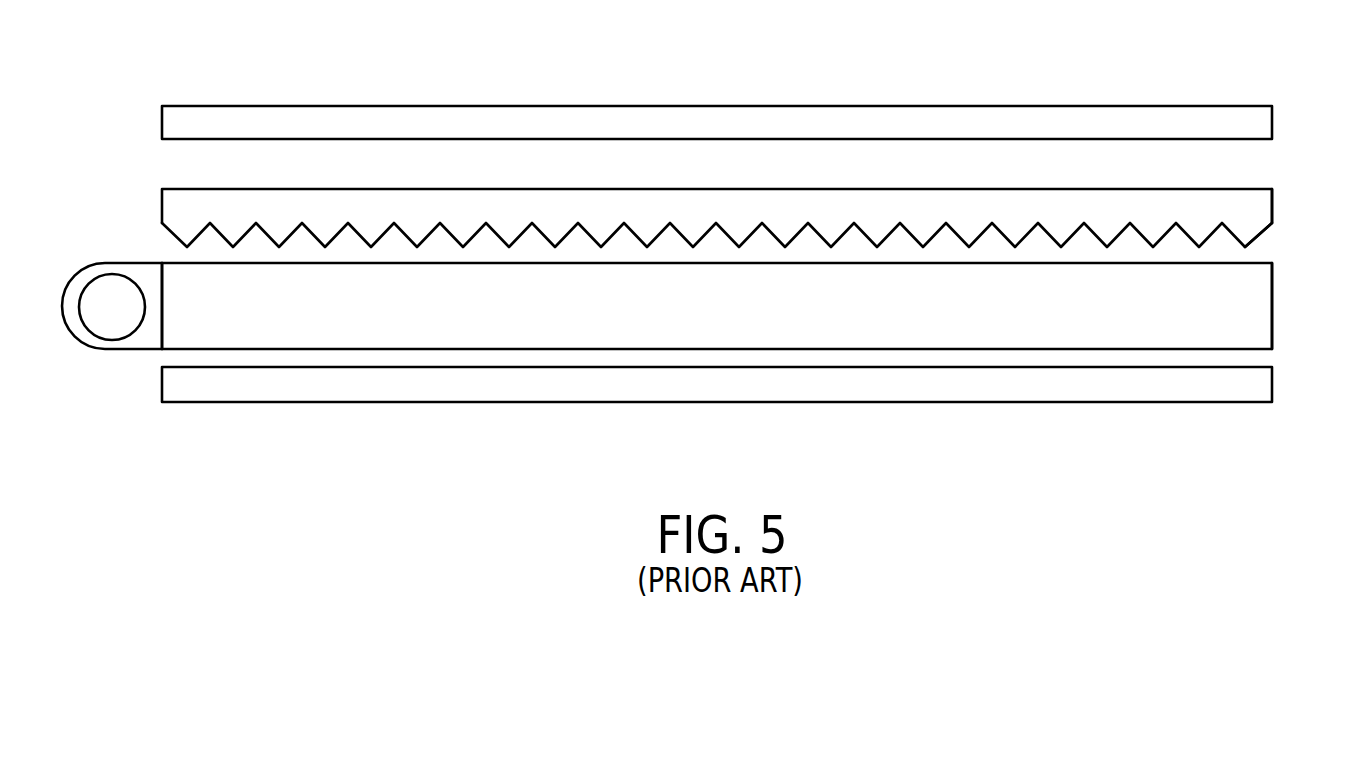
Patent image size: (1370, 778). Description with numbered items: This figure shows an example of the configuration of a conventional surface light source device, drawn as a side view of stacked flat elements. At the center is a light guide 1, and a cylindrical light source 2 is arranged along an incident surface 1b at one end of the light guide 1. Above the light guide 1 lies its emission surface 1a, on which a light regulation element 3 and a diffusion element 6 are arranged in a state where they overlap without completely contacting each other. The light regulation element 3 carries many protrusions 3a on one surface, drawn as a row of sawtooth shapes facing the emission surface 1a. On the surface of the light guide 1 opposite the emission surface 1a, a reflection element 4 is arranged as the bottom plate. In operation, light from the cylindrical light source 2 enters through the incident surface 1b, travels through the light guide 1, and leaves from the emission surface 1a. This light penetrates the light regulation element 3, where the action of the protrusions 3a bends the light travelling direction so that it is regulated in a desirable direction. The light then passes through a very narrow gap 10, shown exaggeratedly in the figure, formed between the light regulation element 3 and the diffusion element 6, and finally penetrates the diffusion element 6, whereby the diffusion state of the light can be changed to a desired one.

The light guide 1 is at (679, 323).
The emission surface 1a is at (1263, 264).
The incident surface 1b is at (161, 332).
The cylindrical light source 2 is at (93, 323).
The light regulation element 3 is at (180, 209).
The protrusions 3a is at (1260, 209).
The reflection element 4 is at (995, 402).
The diffusion element 6 is at (720, 106).
The very narrow gap 10 is at (1260, 157).